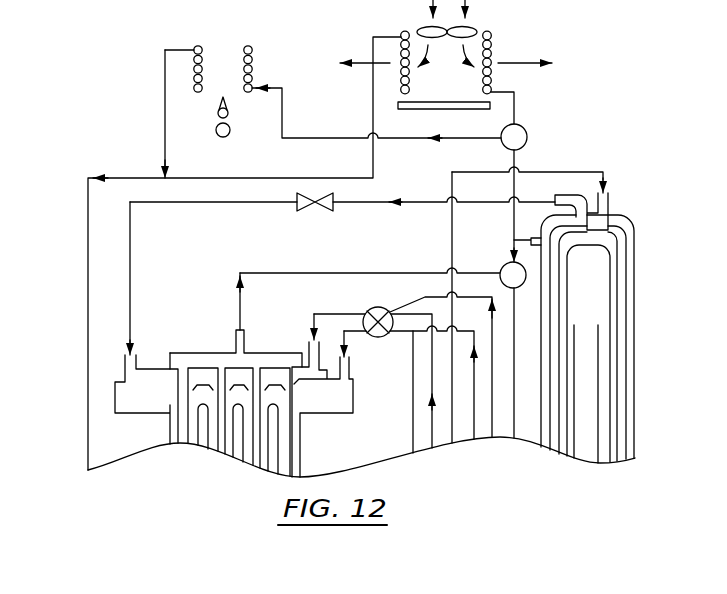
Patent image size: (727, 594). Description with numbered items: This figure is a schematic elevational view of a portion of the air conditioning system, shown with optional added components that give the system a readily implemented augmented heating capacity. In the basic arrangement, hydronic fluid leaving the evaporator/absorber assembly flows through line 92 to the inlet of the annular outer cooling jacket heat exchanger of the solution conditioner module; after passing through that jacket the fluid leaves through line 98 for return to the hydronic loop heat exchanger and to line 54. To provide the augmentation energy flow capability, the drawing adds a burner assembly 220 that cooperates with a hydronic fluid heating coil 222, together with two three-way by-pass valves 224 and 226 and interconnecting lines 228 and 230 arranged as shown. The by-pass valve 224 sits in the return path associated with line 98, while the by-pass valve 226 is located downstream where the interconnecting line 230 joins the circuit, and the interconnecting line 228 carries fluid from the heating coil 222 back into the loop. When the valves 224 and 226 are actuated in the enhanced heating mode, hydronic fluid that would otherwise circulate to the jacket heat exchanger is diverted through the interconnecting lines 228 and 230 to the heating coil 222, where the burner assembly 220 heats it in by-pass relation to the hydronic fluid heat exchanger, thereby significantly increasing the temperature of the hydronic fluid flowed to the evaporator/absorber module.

The line 54 is at (88, 280).
The line 92 is at (356, 272).
The line 98 is at (516, 110).
The burner assembly 220 is at (226, 140).
The hydronic fluid heating coil 222 is at (253, 50).
The 3-way by-pass valve 224 is at (528, 137).
The 3-way by-pass valve 226 is at (506, 263).
The interconnecting line 228 is at (343, 137).
The interconnecting line 230 is at (511, 250).